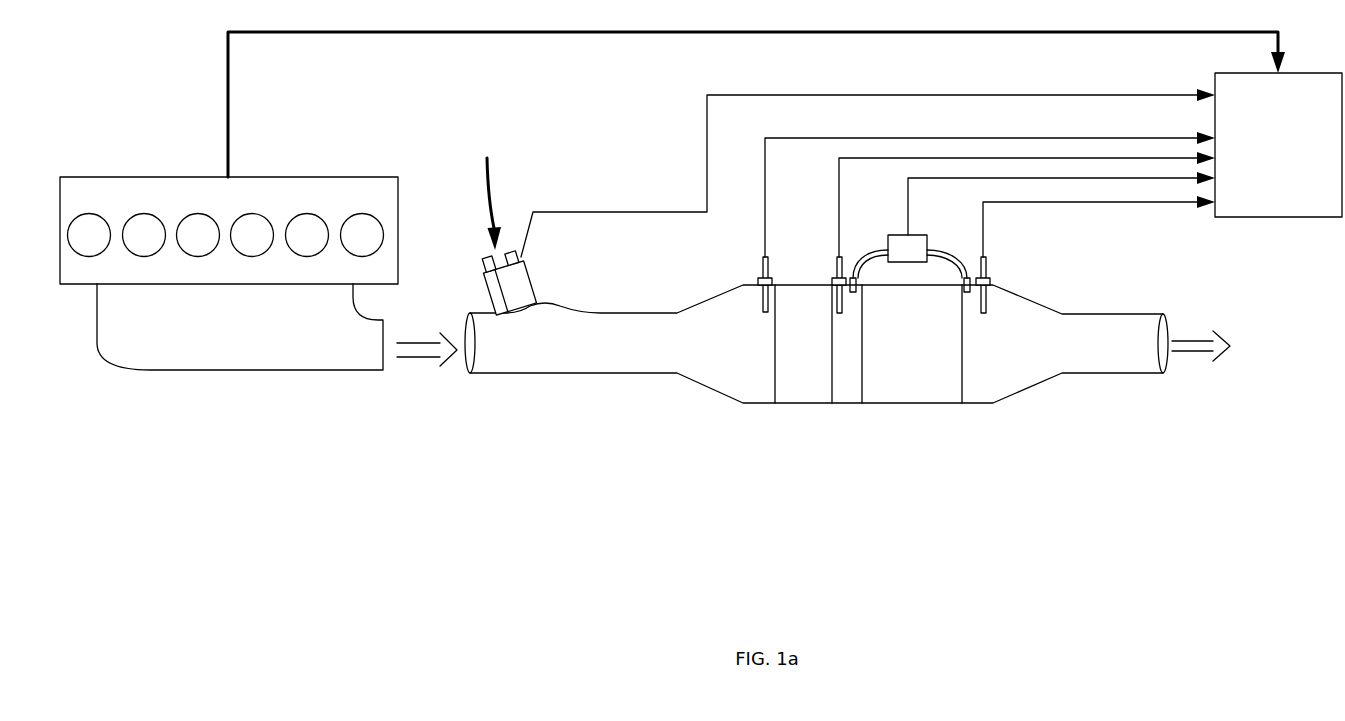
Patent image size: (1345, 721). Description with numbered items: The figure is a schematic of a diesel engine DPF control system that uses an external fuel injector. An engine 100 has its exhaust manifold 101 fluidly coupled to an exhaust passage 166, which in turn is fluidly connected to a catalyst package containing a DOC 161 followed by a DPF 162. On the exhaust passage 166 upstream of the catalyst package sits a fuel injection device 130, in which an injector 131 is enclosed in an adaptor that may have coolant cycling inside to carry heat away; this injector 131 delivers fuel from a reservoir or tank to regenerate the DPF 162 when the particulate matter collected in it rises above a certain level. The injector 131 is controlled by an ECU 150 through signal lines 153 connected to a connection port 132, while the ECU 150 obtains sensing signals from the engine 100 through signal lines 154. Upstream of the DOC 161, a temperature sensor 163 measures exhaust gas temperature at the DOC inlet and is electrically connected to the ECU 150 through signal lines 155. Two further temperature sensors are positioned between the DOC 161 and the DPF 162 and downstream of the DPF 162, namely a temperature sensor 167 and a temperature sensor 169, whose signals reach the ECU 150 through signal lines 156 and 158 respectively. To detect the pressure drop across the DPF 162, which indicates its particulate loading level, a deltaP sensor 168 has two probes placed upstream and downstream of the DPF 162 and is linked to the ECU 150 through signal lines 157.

The engine 100 is at (166, 172).
The exhaust manifold 101 is at (228, 370).
The fuel injection device 130 is at (538, 277).
The injector 131 is at (494, 253).
The connection port 132 is at (526, 255).
The ECU 150 is at (1289, 224).
The signal lines 153 is at (1030, 95).
The signal lines 154 is at (1119, 33).
The signal lines 155 is at (1089, 138).
The signal lines 156 is at (1049, 158).
The signal lines 157 is at (993, 178).
The signal lines 158 is at (1137, 202).
The DOC 161 is at (803, 387).
The DPF 162 is at (918, 388).
The temperature sensor 163 is at (764, 257).
The exhaust passage 166 is at (530, 373).
The temperature sensor 167 is at (841, 257).
The deltaP sensor 168 is at (908, 235).
The temperature sensor 169 is at (988, 258).